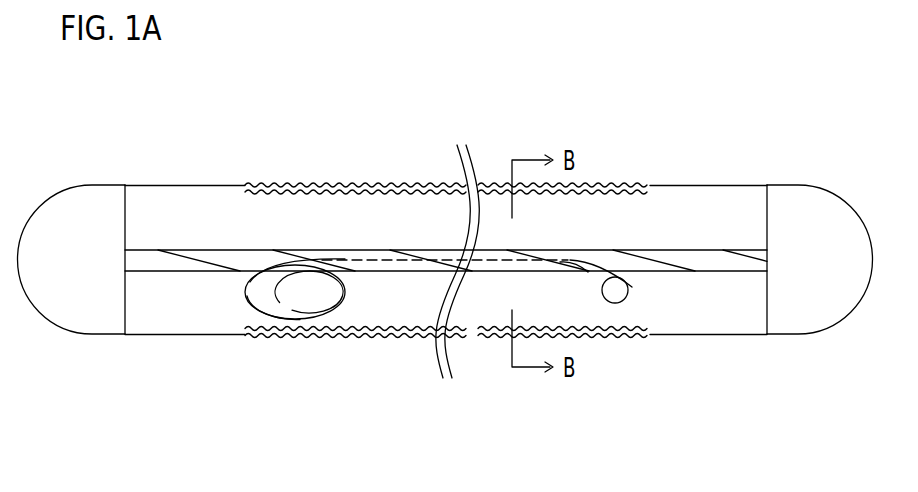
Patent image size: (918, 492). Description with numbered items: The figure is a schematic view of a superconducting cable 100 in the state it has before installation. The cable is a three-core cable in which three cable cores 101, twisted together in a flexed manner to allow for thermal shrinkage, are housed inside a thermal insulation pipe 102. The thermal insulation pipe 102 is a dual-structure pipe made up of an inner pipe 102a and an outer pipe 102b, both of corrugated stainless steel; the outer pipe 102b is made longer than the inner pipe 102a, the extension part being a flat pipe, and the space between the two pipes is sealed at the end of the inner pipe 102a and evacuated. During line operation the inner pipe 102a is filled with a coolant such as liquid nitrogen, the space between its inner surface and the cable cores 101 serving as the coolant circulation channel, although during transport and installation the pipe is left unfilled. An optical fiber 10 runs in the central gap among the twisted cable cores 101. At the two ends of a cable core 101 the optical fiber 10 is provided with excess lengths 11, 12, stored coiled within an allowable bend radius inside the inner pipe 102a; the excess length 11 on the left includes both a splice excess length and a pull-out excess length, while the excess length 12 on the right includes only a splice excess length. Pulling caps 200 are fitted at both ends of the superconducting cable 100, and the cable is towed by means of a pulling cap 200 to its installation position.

The superconducting cable 100 is at (628, 182).
The cable core 101 is at (707, 275).
The thermal insulation pipe 102 is at (446, 221).
The inner pipe 102a is at (327, 201).
The outer pipe 102b is at (271, 187).
The optical fiber 10 is at (388, 262).
The excess length 11 is at (302, 319).
The excess length 12 is at (617, 303).
The pulling cap 200 is at (103, 334).